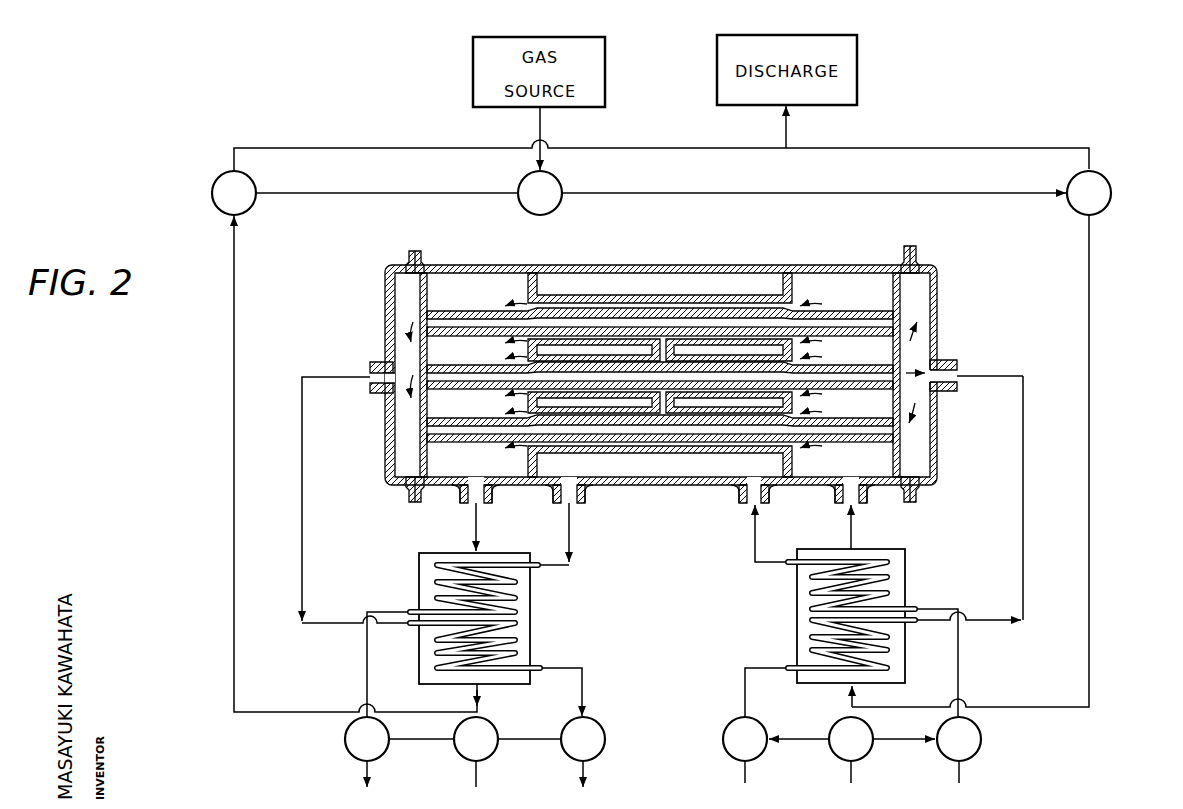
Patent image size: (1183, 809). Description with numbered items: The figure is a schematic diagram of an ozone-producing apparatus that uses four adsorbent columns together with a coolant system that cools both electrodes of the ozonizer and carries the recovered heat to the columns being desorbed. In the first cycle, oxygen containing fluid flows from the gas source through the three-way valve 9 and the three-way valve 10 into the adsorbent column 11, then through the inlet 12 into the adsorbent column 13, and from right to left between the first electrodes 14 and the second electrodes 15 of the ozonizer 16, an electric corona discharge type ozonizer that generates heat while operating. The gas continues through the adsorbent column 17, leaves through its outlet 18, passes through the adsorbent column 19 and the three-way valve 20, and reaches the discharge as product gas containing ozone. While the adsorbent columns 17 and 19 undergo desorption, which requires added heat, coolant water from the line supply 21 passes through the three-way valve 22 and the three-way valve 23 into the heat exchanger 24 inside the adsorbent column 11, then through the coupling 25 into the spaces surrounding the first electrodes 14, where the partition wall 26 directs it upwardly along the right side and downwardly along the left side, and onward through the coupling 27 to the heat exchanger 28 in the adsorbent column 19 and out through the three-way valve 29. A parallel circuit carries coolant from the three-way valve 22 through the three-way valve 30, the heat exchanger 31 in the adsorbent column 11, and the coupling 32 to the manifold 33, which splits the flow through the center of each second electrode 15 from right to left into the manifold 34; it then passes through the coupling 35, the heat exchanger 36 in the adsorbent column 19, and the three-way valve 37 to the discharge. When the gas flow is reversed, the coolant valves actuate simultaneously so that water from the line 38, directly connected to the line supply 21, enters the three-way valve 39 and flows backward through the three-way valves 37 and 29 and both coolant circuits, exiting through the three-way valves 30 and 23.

The three-way valve 9 is at (561, 187).
The three-way valve 10 is at (1111, 191).
The adsorbent column 11 is at (803, 601).
The inlet 12 is at (840, 503).
The adsorbent column 13 is at (878, 283).
The first electrodes 14 is at (646, 297).
The second electrodes 15 is at (597, 323).
The ozonizer 16 is at (708, 262).
The adsorbent column 17 is at (466, 262).
The outlet 18 is at (462, 498).
The adsorbent column 19 is at (531, 617).
The three-way valve 20 is at (212, 187).
The line supply 21 is at (852, 779).
The three-way valve 22 is at (872, 733).
The three-way valve 23 is at (979, 742).
The heat exchanger 24 is at (890, 580).
The coupling 25 is at (745, 503).
The partition wall 26 is at (528, 286).
The coupling 27 is at (555, 500).
The heat exchanger 28 is at (513, 582).
The three-way valve 29 is at (352, 748).
The three-way valve 30 is at (725, 742).
The heat exchanger 31 is at (893, 650).
The coupling 32 is at (957, 366).
The manifold 33 is at (926, 322).
The manifold 34 is at (395, 299).
The coupling 35 is at (377, 362).
The heat exchanger 36 is at (520, 655).
The three-way valve 37 is at (604, 738).
The line 38 is at (478, 770).
The three-way valve 39 is at (497, 731).